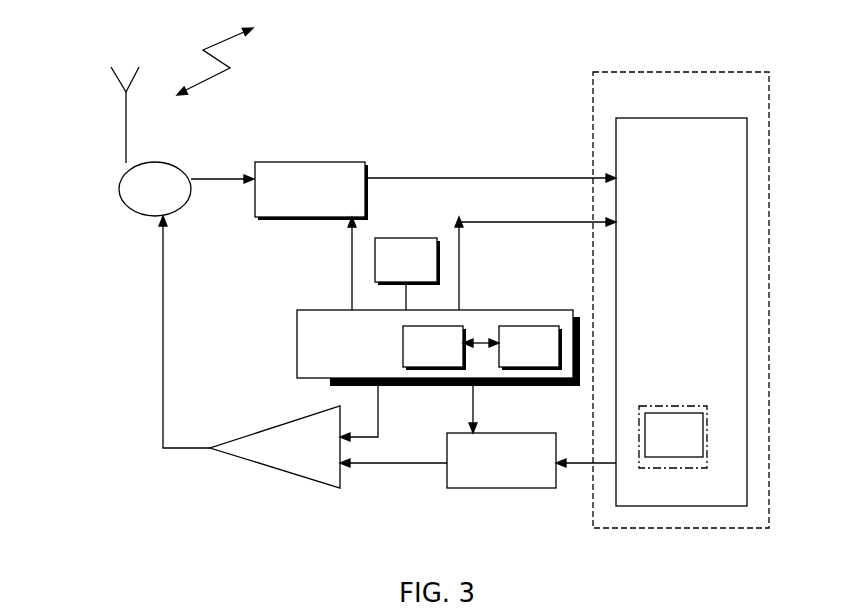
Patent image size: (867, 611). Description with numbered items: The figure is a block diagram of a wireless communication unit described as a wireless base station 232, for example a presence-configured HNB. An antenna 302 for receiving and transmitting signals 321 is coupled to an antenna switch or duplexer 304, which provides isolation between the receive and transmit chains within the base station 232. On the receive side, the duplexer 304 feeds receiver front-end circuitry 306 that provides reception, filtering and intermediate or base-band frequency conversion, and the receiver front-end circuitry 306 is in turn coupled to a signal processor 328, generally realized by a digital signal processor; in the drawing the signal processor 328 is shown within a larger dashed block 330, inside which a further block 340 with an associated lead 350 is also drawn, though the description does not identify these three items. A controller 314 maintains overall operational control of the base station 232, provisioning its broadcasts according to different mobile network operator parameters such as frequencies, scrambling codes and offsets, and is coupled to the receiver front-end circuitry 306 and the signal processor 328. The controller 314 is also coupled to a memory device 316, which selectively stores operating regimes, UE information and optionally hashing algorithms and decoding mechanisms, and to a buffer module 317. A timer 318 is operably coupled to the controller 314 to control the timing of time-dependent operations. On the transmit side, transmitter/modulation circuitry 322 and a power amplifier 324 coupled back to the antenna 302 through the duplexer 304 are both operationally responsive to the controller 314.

The wireless base station 232 is at (469, 105).
The antenna 302 is at (126, 130).
The antenna switch or duplexer 304 is at (155, 189).
The receiver front-end circuitry 306 is at (289, 201).
The controller 314 is at (315, 356).
The memory device 316 is at (413, 358).
The buffer module 317 is at (509, 358).
The timer 318 is at (386, 273).
The signals 321 is at (203, 50).
The transmitter/modulation circuitry 322 is at (481, 473).
The power amplifier 324 is at (273, 453).
The signal processor 328 is at (661, 159).
The host system 330 is at (661, 113).
The memory module 340 is at (654, 448).
The configuration data 350 is at (687, 468).